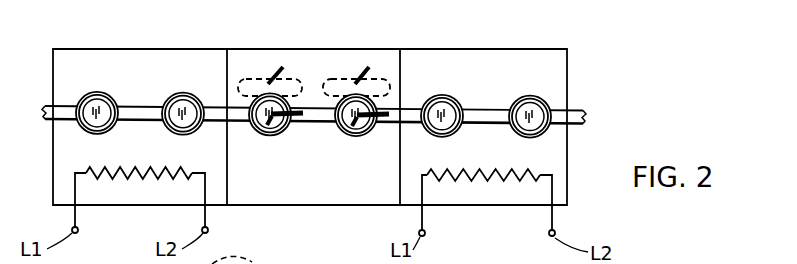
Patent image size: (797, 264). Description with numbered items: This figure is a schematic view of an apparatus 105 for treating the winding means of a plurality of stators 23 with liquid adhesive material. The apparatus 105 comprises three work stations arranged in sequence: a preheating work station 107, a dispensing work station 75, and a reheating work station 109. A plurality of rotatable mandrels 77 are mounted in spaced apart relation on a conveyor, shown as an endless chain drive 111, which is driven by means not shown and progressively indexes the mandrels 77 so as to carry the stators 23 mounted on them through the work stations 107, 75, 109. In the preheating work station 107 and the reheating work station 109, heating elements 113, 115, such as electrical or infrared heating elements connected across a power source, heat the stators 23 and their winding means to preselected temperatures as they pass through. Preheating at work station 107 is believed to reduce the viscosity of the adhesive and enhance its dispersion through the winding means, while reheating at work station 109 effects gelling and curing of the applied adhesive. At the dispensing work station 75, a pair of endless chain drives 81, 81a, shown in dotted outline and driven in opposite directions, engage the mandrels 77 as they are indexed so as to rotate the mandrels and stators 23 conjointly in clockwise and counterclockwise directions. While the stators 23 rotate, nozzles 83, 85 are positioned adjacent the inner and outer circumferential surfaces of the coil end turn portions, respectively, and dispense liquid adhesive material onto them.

The apparatus 105 is at (346, 126).
The preheating work station 107 is at (134, 63).
The dispensing work station 75 is at (290, 195).
The reheating work station 109 is at (522, 28).
The endless chain drive conveyor 111 is at (40, 102).
The stator 23 is at (86, 96).
The mandrel 77 is at (100, 121).
The endless chain drive 81 is at (245, 78).
The endless chain drive 81a is at (377, 79).
The nozzle 83 is at (300, 118).
The nozzle 85 is at (276, 66).
The heating element 113 is at (148, 178).
The heating element 115 is at (513, 178).